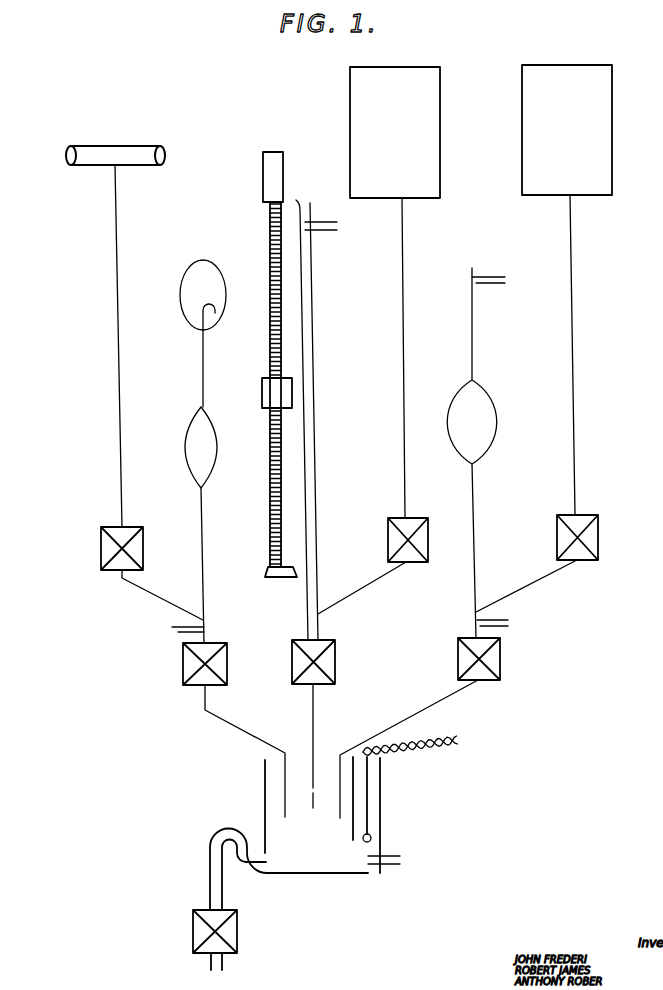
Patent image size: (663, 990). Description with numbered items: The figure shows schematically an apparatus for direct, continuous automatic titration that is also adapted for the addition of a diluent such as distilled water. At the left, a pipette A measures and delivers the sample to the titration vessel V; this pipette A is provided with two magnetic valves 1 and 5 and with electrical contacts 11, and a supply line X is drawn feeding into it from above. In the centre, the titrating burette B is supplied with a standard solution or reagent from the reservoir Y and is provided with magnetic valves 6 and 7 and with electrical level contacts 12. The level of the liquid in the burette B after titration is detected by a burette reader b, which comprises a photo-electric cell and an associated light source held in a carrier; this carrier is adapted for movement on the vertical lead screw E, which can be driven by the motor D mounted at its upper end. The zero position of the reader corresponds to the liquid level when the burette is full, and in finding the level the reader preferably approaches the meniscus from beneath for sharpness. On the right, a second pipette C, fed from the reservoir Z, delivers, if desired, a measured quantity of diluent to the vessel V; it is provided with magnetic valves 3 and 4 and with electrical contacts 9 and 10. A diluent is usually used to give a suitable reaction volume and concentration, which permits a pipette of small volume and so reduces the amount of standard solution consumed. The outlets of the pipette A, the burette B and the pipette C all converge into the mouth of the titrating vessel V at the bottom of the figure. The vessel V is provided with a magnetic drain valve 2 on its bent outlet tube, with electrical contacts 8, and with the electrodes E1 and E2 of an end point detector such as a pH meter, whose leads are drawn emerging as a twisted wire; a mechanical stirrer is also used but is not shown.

The magnetic valve 1 is at (100, 548).
The magnetic drain valve 2 is at (192, 930).
The magnetic valve 3 is at (599, 540).
The magnetic valve 4 is at (501, 660).
The magnetic valve 5 is at (182, 663).
The magnetic valve 6 is at (429, 540).
The magnetic valve 7 is at (336, 660).
The electrical contacts 8 is at (392, 864).
The electrical contacts 9 is at (495, 453).
The electrical contacts 10 is at (505, 625).
The electrical contacts 11 is at (178, 631).
The electrical level contacts 12 is at (333, 229).
The gas supply tube X is at (137, 145).
The reservoir Y is at (383, 62).
The reservoir Z is at (542, 62).
The motor D is at (273, 151).
The vertical lead screw E is at (272, 493).
The burette reader b is at (270, 392).
The titrating burette B is at (318, 392).
The pipette A is at (186, 449).
The pipette C is at (496, 422).
The electrode E1 is at (355, 800).
The electrode E2 is at (370, 822).
The titrating vessel V is at (315, 867).